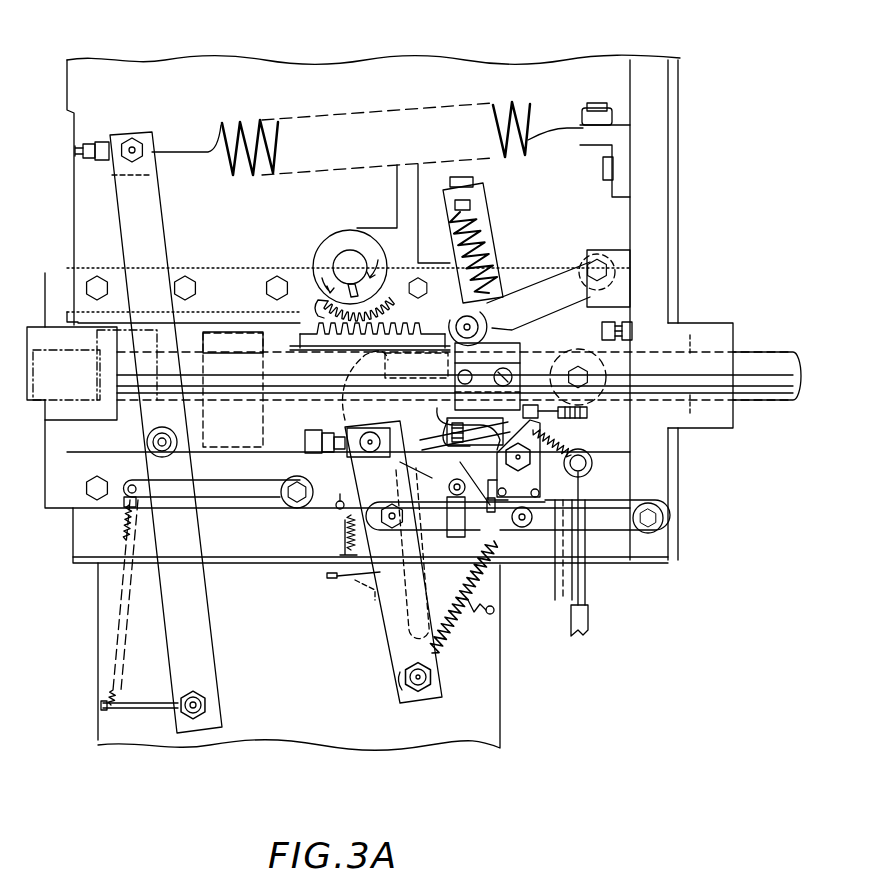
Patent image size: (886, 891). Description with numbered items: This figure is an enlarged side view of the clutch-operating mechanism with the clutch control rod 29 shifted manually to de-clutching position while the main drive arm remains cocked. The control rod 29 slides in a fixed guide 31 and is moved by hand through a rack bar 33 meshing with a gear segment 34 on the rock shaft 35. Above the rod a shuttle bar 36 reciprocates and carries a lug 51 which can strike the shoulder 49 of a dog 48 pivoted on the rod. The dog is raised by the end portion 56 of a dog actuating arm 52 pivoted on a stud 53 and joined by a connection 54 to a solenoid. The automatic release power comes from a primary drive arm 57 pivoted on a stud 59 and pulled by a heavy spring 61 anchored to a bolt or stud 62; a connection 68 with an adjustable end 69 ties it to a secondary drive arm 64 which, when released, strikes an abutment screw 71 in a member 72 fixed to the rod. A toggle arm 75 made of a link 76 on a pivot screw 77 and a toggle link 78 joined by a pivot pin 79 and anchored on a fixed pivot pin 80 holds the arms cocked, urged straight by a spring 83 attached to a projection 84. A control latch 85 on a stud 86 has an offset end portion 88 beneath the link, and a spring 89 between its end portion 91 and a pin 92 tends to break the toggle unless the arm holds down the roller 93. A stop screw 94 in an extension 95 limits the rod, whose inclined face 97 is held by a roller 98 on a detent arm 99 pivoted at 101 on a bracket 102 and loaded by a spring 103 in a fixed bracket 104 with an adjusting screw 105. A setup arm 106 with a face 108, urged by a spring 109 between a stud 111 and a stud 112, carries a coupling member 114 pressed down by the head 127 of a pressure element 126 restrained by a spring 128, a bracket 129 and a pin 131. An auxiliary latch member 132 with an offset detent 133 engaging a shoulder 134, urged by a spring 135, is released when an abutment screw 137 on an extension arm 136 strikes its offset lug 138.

The clutch control rod 29 is at (226, 360).
The fixed guide 31 is at (720, 330).
The rack bar 33 is at (314, 330).
The gear segment 34 is at (325, 305).
The rock shaft 35 is at (352, 257).
The shuttle bar 36 is at (195, 333).
The dog 48 is at (437, 410).
The shoulder 49 is at (498, 370).
The lug 51 is at (427, 340).
The dog actuating arm 52 is at (592, 463).
The stud 53 is at (532, 457).
The connection 54 is at (590, 598).
The end portion 56 is at (445, 439).
The primary drive arm 57 is at (150, 220).
The stud 59 is at (181, 709).
The spring 61 is at (265, 118).
The bolt or stud 62 is at (592, 107).
The secondary drive arm 64 is at (384, 626).
The connection 68 is at (236, 437).
The longitudinally adjustable end 69 is at (345, 432).
The abutment screw 71 is at (437, 443).
The member 72 is at (490, 447).
The toggle arm 75 is at (560, 540).
The link 76 is at (440, 531).
The pivot or pin screw 77 is at (393, 529).
The toggle link 78 is at (605, 522).
The pivot pin 79 is at (522, 528).
The fixed pivot pin 80 is at (664, 518).
The spring 83 is at (449, 636).
The projection 84 is at (405, 679).
The control latch 85 is at (298, 512).
The stud 86 is at (292, 488).
The offset end portion 88 is at (455, 537).
The spring 89 is at (128, 615).
The end portion 91 is at (126, 506).
The pin 92 is at (152, 688).
The roller 93 is at (449, 489).
The stop screw 94 is at (628, 322).
The extension 95 is at (606, 322).
The inclined face 97 is at (486, 326).
The roller 98 is at (478, 315).
The detent arm 99 is at (575, 268).
The pivot 101 is at (600, 262).
The bracket 102 is at (623, 258).
The spring 103 is at (485, 225).
The fixed bracket 104 is at (475, 190).
The adjusting screw 105 is at (470, 205).
The setup arm 106 is at (352, 396).
The face 108 is at (390, 352).
The spring 109 is at (358, 585).
The stud 111 is at (495, 611).
The stud 112 is at (327, 577).
The coupling member 114 is at (400, 622).
The pressure element 126 is at (305, 441).
The head 127 is at (415, 470).
The spring 128 is at (345, 522).
The bracket 129 is at (347, 536).
The pin 131 is at (340, 500).
The auxiliary latch member 132 is at (540, 482).
The offset detent 133 is at (495, 470).
The shoulder 134 is at (488, 512).
The spring 135 is at (572, 450).
The extension arm 136 is at (548, 418).
The abutment screw 137 is at (588, 412).
The offset lug 138 is at (526, 405).